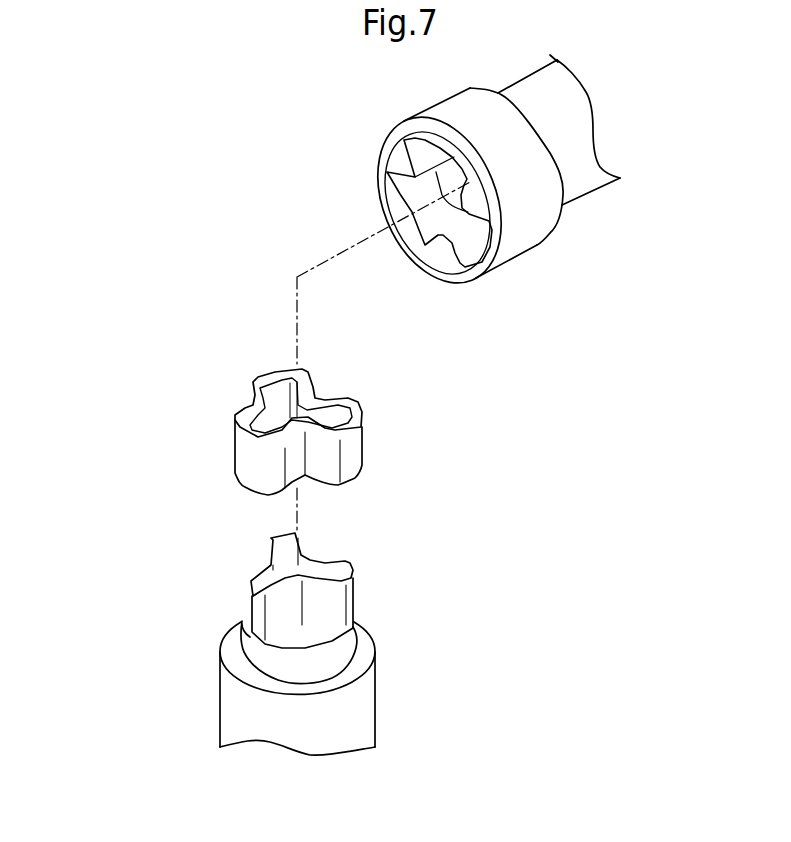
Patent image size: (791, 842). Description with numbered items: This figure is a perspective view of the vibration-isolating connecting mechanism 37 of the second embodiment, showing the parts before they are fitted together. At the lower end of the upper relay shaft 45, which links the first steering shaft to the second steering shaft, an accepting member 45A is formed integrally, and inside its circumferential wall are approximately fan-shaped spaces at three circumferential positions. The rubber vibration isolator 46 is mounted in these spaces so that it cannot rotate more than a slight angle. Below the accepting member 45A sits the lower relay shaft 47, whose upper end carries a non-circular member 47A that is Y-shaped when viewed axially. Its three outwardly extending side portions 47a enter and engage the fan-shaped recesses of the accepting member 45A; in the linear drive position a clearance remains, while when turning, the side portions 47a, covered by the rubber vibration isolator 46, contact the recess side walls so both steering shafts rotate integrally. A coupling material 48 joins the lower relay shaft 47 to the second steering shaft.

The vibration-isolating connecting mechanism 37 is at (167, 255).
The upper relay shaft 45 is at (577, 188).
The accepting member 45A is at (440, 250).
The rubber vibration isolator 46 is at (357, 440).
The lower relay shaft 47 is at (340, 650).
The non-circular member 47A is at (355, 598).
The side portions 47a is at (253, 580).
The coupling material 48 is at (367, 722).